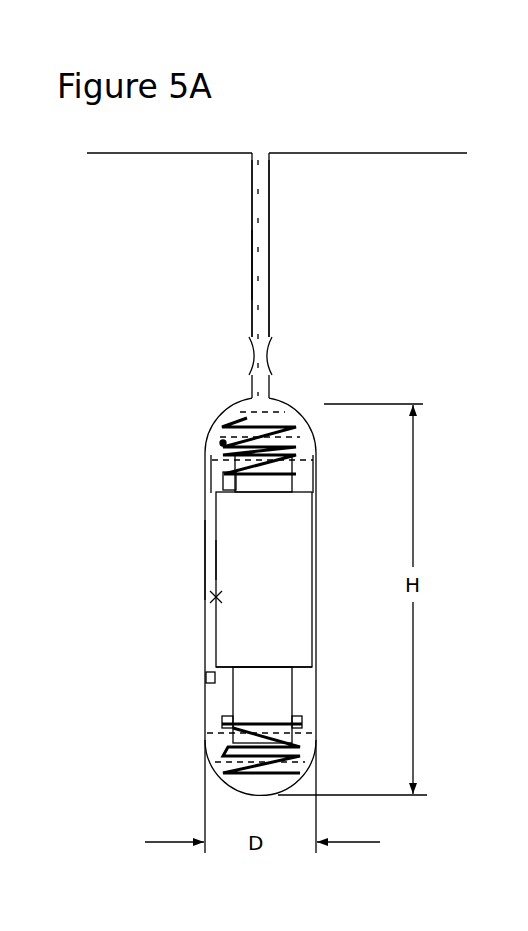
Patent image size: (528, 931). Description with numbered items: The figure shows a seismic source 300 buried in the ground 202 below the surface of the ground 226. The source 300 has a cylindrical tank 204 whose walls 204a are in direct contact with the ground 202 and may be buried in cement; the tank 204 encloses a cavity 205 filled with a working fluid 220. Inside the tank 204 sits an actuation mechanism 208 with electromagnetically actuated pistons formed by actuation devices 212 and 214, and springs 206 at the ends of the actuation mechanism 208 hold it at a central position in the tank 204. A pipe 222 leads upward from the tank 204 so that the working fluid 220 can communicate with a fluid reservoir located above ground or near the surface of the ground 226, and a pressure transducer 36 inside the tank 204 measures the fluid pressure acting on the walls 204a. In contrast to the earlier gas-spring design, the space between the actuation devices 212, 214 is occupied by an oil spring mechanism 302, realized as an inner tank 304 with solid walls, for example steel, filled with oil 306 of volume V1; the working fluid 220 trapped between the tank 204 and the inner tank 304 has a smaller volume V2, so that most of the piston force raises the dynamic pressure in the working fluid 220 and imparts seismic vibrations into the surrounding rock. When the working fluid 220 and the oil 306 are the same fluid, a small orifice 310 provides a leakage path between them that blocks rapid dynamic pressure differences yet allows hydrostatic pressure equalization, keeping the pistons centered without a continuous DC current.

The source 300 is at (287, 126).
The surface of the ground 226 is at (358, 152).
The pipe 222 is at (252, 202).
The ground 202 is at (198, 272).
The tank 204 is at (204, 496).
The walls 204a is at (205, 533).
The springs 206 is at (248, 413).
The cavity 205 is at (219, 442).
The actuation mechanism 208 is at (218, 484).
The actuation device 214 is at (272, 487).
The oil spring mechanism 302 is at (288, 532).
The oil 306 is at (282, 564).
The inner tank 304 is at (287, 660).
The orifice 310 is at (185, 600).
The pressure transducer 36 is at (206, 677).
The working fluid 220 is at (223, 697).
The actuation device 212 is at (268, 687).